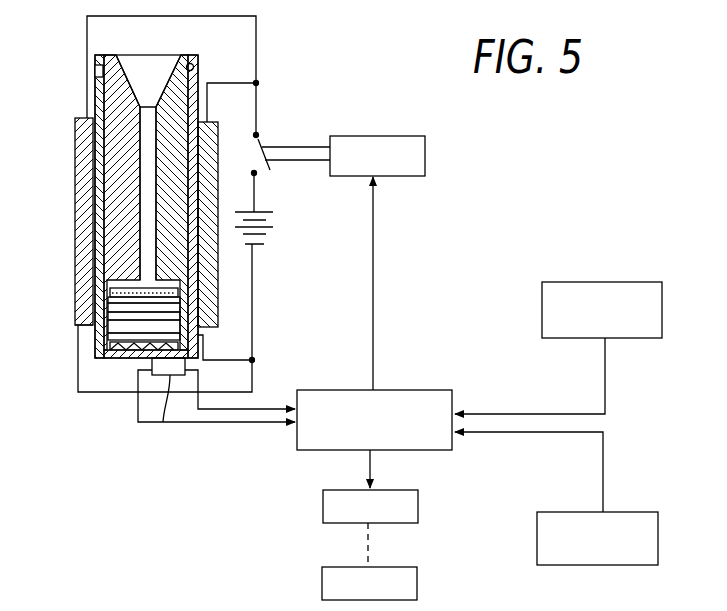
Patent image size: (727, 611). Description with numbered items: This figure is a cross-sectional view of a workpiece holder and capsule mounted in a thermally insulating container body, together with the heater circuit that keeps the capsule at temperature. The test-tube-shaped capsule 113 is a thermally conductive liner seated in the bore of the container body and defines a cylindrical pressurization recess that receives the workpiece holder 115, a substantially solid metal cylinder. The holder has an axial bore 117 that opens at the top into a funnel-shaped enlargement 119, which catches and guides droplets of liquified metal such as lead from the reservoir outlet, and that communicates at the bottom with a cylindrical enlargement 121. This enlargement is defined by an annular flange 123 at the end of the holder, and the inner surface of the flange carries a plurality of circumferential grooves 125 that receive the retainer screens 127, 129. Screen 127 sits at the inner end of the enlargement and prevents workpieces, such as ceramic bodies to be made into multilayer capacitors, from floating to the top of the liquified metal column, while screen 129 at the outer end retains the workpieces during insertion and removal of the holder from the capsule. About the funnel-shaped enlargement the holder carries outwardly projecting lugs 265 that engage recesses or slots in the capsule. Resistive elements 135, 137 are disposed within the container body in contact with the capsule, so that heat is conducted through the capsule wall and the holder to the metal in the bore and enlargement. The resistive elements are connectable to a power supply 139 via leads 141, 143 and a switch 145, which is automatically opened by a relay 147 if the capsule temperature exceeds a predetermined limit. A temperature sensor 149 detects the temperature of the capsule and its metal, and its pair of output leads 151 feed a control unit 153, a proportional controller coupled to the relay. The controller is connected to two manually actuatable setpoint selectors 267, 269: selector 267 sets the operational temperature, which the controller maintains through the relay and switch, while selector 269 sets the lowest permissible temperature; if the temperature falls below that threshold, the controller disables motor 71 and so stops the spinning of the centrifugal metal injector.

The motor 71 is at (408, 567).
The capsule 113 is at (100, 74).
The workpiece holder 115 is at (118, 117).
The axial bore 117 is at (148, 162).
The funnel-shaped enlargement 119 is at (140, 64).
The cylindrical enlargement 121 is at (158, 318).
The annular flange 123 is at (90, 328).
The circumferential grooves 125 is at (175, 328).
The retainer screen 127 is at (107, 318).
The retainer screen 129 is at (127, 348).
The resistive element 135 is at (85, 202).
The resistive element 137 is at (208, 275).
The power supply 139 is at (273, 230).
The lead 141 is at (257, 78).
The lead 143 is at (251, 370).
The switch 145 is at (259, 137).
The relay 147 is at (382, 136).
The temperature sensor 149 is at (216, 405).
The output leads 151 is at (229, 414).
The control unit 153 is at (427, 452).
The lugs 265 is at (191, 63).
The setpoint selector 267 is at (637, 282).
The setpoint selector 269 is at (637, 512).